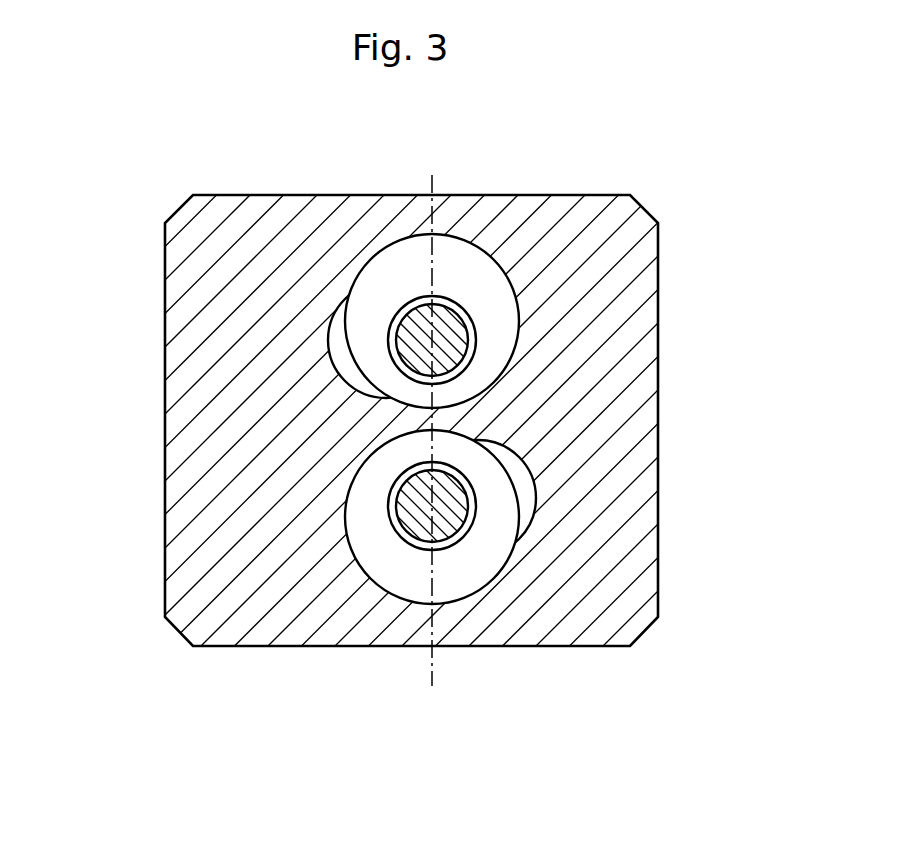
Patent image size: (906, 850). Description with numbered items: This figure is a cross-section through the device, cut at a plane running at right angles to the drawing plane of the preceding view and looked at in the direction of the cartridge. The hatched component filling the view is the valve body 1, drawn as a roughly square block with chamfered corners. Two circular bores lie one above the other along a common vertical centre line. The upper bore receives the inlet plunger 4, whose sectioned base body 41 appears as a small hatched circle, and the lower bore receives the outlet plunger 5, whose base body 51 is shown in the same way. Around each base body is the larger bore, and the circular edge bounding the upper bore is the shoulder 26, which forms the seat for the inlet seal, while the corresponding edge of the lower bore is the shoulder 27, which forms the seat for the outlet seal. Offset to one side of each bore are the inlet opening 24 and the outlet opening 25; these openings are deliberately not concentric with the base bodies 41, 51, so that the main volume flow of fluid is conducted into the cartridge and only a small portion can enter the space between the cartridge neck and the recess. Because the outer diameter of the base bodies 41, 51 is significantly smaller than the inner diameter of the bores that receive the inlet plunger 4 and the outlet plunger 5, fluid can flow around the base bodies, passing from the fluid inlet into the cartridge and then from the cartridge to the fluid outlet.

The valve body 1 is at (633, 318).
The inlet plunger 4 is at (433, 320).
The outlet plunger 5 is at (455, 512).
The inlet opening 24 is at (457, 371).
The outlet opening 25 is at (465, 535).
The shoulder 26 is at (398, 262).
The shoulder 27 is at (402, 583).
The base body of the inlet plunger 41 is at (418, 348).
The base body of the outlet plunger 51 is at (410, 518).